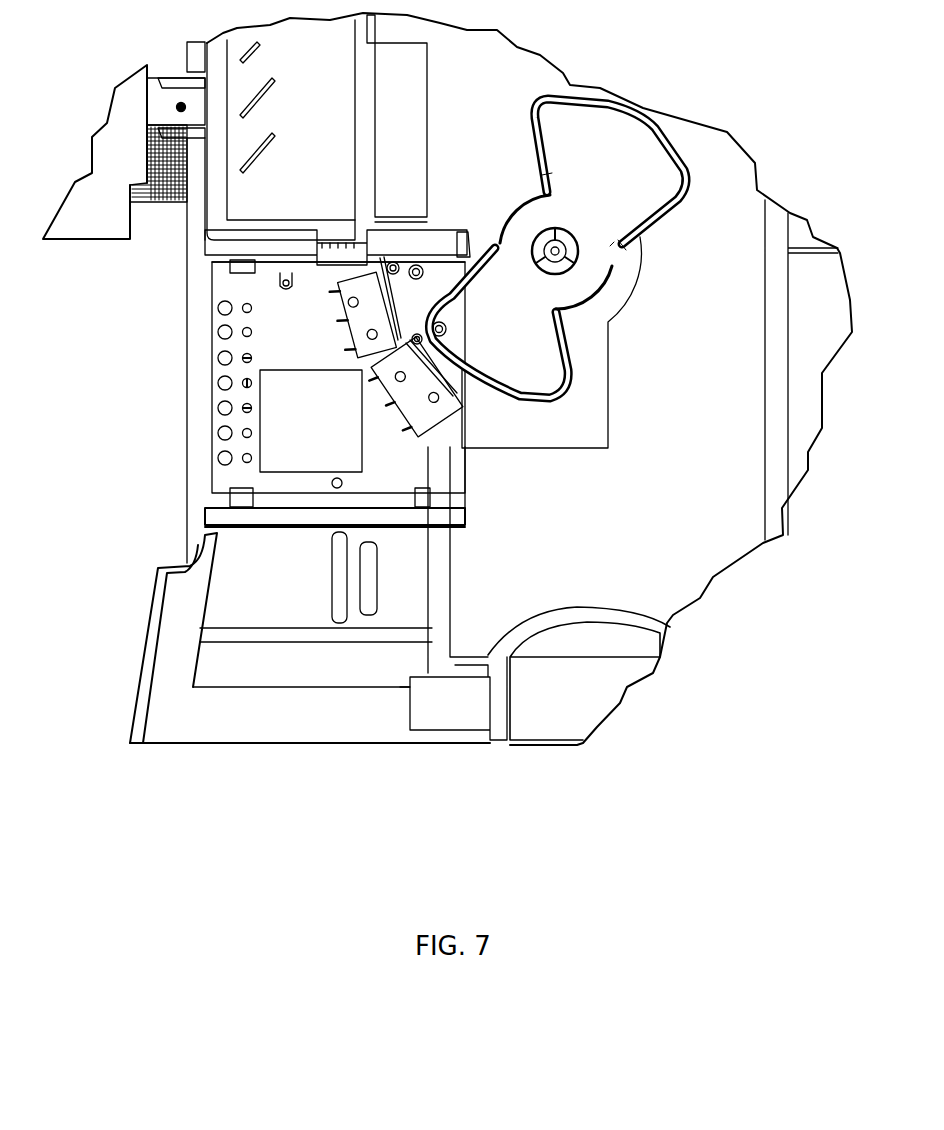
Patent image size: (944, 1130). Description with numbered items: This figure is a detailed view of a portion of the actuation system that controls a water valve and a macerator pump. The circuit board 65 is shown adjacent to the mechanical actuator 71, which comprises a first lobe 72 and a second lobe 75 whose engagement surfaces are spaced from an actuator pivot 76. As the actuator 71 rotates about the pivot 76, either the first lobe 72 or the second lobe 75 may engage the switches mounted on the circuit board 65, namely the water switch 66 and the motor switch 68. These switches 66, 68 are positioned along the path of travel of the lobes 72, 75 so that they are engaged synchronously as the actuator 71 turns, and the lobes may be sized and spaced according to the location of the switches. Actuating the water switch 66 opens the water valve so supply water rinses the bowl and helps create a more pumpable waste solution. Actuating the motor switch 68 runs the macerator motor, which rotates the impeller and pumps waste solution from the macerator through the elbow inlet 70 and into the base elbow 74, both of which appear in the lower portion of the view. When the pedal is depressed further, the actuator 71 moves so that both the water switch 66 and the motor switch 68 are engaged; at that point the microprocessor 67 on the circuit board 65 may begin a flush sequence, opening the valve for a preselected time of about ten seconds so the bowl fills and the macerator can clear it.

The circuit board 65 is at (227, 292).
The water switch 66 is at (413, 402).
The microprocessor 67 is at (290, 422).
The motor switch 68 is at (367, 310).
The elbow inlet 70 is at (437, 713).
The mechanical actuator 71 is at (453, 363).
The first lobe 72 is at (532, 407).
The base elbow 74 is at (600, 650).
The second lobe 75 is at (613, 143).
The actuator pivot 76 is at (570, 240).